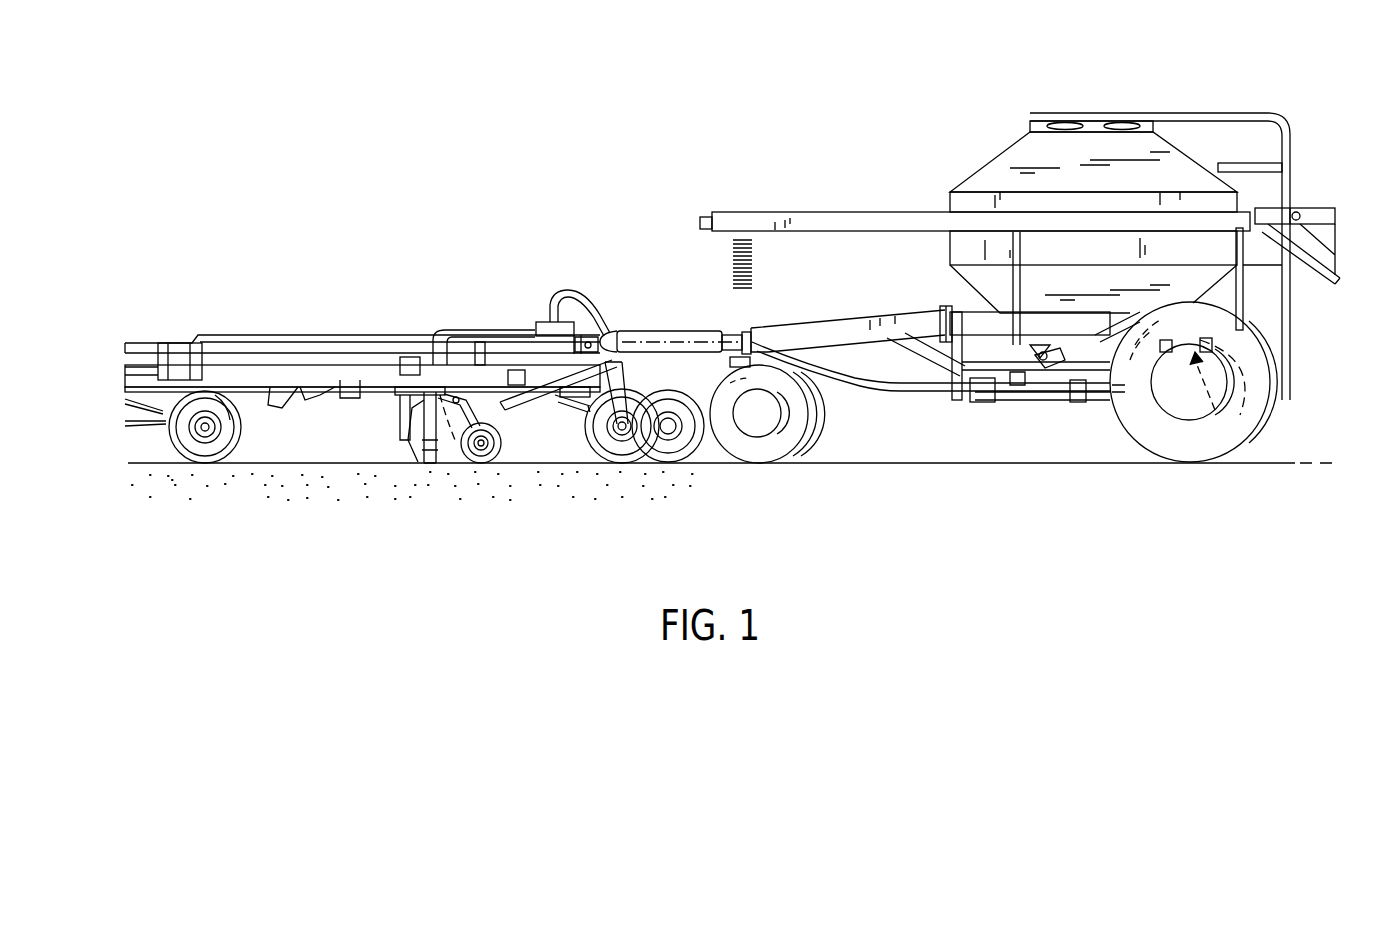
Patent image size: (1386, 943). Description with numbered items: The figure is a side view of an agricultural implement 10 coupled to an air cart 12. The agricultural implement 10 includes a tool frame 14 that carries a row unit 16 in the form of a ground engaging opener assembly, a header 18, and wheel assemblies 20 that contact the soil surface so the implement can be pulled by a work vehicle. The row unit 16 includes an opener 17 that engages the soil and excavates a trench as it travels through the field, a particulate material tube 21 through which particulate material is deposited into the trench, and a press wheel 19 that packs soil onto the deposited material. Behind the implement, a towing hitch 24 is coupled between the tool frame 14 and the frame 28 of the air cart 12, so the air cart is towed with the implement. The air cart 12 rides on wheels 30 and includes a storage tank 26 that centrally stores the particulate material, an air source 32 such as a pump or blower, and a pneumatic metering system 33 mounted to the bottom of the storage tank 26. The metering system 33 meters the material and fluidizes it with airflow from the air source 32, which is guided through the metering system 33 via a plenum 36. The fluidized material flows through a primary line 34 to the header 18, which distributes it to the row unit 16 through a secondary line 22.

The agricultural implement 10 is at (386, 268).
The air cart 12 is at (993, 92).
The tool frame 14 is at (418, 352).
The row unit 16 is at (390, 440).
The opener 17 is at (420, 460).
The header 18 is at (546, 322).
The press wheel 19 is at (501, 450).
The wheel assemblies 20 is at (632, 395).
The particulate material tube 21 is at (455, 440).
The secondary lines 22 is at (490, 335).
The towing hitch 24 is at (600, 343).
The storage tank 26 is at (1018, 152).
The frame 28 is at (825, 322).
The wheels 30 is at (830, 413).
The air source 32 is at (1258, 300).
The pneumatic metering system 33 is at (1060, 366).
The primary line 34 is at (880, 390).
The plenum 36 is at (1240, 418).